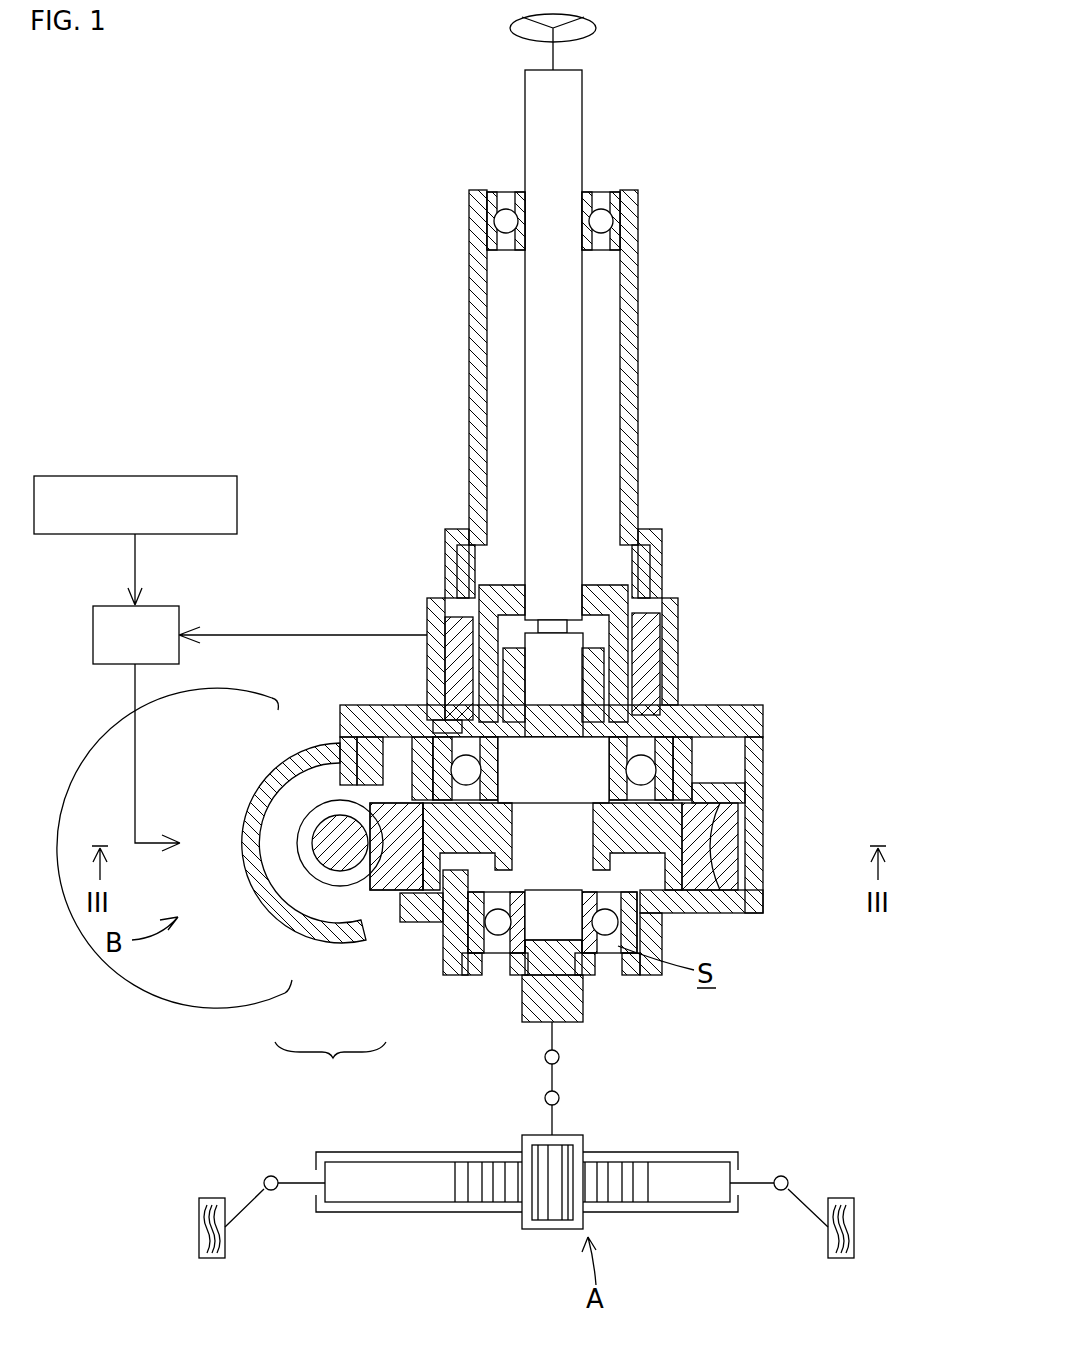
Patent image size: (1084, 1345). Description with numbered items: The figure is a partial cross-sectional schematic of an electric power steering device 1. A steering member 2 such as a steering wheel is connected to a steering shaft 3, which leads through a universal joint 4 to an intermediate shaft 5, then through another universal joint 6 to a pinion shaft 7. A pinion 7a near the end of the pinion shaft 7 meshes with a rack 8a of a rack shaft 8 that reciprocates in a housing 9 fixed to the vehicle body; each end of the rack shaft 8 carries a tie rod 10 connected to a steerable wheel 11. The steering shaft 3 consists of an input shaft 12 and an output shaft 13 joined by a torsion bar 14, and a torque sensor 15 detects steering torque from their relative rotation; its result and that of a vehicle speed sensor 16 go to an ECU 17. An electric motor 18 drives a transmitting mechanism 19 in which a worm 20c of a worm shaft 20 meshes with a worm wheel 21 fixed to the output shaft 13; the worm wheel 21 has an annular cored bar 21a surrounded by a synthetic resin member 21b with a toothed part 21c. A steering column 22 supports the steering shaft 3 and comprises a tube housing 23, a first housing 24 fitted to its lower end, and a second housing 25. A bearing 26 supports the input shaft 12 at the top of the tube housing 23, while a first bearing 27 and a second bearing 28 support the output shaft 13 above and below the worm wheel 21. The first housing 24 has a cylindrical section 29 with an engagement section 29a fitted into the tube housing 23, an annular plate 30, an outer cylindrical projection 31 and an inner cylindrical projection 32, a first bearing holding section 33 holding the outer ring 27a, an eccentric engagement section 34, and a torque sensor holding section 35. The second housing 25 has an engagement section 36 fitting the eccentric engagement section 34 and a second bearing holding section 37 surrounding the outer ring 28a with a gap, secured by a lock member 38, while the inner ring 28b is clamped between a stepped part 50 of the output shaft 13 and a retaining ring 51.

The electric power steering device 1 is at (650, 78).
The steering member 2 is at (514, 30).
The steering shaft 3 is at (598, 126).
The universal joint 4 is at (560, 1060).
The intermediate shaft 5 is at (546, 1076).
The universal joint 6 is at (560, 1100).
The pinion shaft 7 is at (540, 1115).
The pinion 7a is at (560, 1218).
The rack shaft 8 is at (620, 1218).
The rack 8a is at (500, 1195).
The housing 9 is at (418, 1150).
The tie rod 10 is at (256, 1202).
The steerable wheel 11 is at (211, 1198).
The input shaft 12 is at (567, 297).
The output shaft 13 is at (575, 1015).
The torsion bar 14 is at (557, 628).
The torque sensor 15 is at (656, 632).
The vehicle speed sensor 16 is at (166, 476).
The ECU 17 is at (166, 606).
The electric motor 18 is at (200, 942).
The transmitting mechanism 19 is at (330, 1061).
The worm shaft 20 is at (325, 865).
The worm 20c is at (332, 872).
The worm wheel 21 is at (378, 893).
The cored bar 21a is at (463, 850).
The synthetic resin member 21b is at (402, 880).
The toothed part 21c is at (737, 850).
The steering column 22 is at (664, 246).
The tube housing 23 is at (640, 350).
The first housing 24 is at (690, 682).
The second housing 25 is at (780, 838).
The bearing 26 is at (506, 212).
The first bearing 27 is at (640, 772).
The outer ring 27a is at (402, 735).
The second bearing 28 is at (614, 918).
The outer ring 28a is at (515, 960).
The inner ring 28b is at (522, 913).
The cylindrical section 29 is at (676, 662).
The engagement section 29a is at (664, 553).
The annular plate 30 is at (378, 694).
The cylindrical projection 31 is at (367, 775).
The cylindrical projection 32 is at (418, 752).
The first bearing holding section 33 is at (690, 778).
The eccentric engagement section 34 is at (765, 755).
The torque sensor holding section 35 is at (455, 640).
The engagement section 36 is at (755, 735).
The second bearing holding section 37 is at (692, 910).
The lock member 38 is at (633, 968).
The stepped part 50 is at (582, 900).
The retaining ring 51 is at (562, 990).